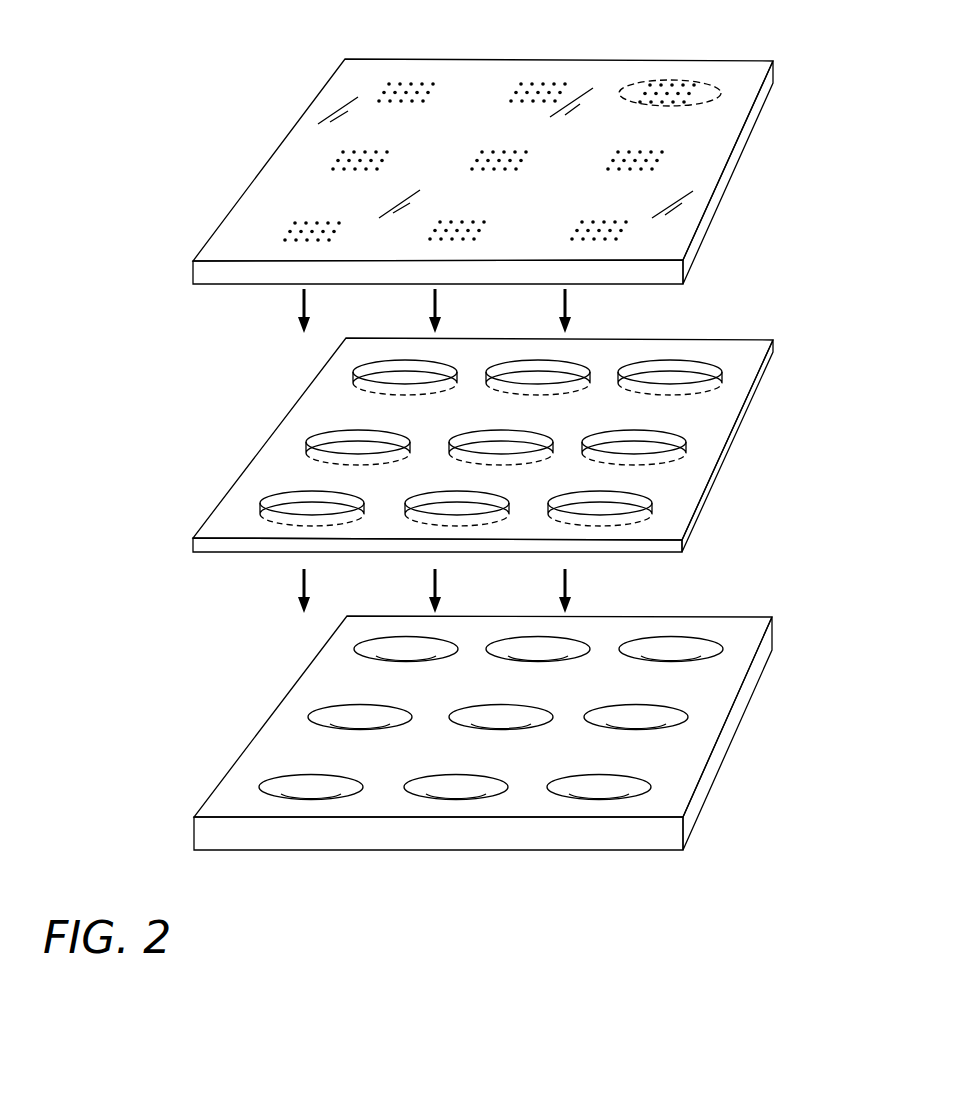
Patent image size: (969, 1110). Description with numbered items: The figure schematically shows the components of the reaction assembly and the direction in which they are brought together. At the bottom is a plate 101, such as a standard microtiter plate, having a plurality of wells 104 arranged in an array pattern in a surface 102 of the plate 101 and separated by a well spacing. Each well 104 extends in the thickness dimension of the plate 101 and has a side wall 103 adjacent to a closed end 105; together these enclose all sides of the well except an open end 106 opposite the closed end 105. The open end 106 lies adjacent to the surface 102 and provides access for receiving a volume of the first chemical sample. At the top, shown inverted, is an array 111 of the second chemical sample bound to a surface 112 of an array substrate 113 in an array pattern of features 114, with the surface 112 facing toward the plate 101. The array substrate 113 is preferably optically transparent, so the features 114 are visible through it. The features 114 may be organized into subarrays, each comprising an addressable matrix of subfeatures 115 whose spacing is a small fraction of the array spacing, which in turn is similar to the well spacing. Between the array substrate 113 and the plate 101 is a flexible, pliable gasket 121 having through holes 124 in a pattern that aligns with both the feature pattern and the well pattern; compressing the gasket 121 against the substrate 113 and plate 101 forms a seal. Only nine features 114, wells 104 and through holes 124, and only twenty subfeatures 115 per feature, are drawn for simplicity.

The plate 101 is at (516, 731).
The surface 102 is at (723, 625).
The side wall 103 is at (326, 715).
The well 104 is at (302, 765).
The closed end 105 is at (600, 797).
The open end 106 is at (500, 782).
The array 111 is at (476, 165).
The surface 112 is at (252, 290).
The array substrate 113 is at (697, 245).
The feature 114 is at (727, 56).
The subfeature 115 is at (703, 100).
The gasket 121 is at (539, 426).
The through hole 124 is at (668, 365).